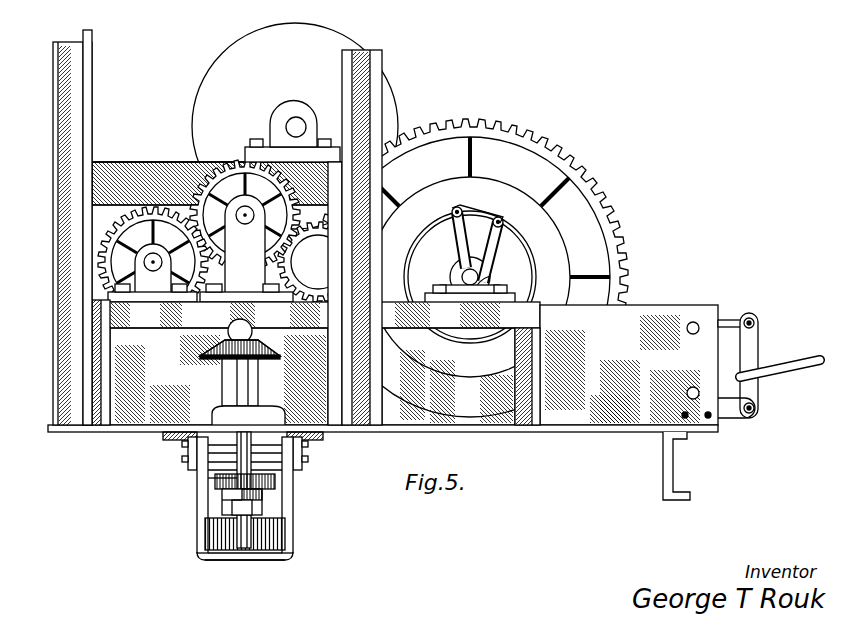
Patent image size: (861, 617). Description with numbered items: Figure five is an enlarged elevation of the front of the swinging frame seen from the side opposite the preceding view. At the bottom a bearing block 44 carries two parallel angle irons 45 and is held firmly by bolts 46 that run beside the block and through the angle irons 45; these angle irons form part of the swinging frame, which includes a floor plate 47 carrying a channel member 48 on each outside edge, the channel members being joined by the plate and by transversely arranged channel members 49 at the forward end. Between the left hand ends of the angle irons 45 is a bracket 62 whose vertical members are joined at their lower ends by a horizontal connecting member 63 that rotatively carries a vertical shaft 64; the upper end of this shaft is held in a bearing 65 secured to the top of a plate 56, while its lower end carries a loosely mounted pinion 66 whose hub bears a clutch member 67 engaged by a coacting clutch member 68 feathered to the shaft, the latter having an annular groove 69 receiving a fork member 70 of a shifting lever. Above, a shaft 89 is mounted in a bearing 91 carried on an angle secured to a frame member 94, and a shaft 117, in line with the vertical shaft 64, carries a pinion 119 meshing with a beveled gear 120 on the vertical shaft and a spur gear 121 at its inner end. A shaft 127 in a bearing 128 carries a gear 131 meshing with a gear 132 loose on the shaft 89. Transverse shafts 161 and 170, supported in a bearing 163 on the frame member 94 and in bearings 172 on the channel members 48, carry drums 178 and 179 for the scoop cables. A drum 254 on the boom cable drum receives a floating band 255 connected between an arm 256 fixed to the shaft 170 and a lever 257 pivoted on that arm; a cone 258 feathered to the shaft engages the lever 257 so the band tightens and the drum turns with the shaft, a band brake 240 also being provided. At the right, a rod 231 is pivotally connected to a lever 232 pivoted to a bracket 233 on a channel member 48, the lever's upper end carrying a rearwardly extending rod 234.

The bearing block 44 is at (278, 480).
The angle irons 45 is at (186, 470).
The bolts 46 is at (228, 458).
The floor plate 47 is at (423, 433).
The channel member 48 is at (414, 365).
The transversely arranged channel members 49 is at (663, 462).
The plate 56 is at (118, 427).
The bracket 62 is at (287, 519).
The connecting member 63 is at (268, 561).
The vertical shaft 64 is at (242, 445).
The bearing 65 is at (262, 418).
The pinion 66 is at (216, 534).
The clutch member 67 is at (236, 515).
The coacting clutch member 68 is at (258, 505).
The annular groove 69 is at (228, 492).
The fork member 70 is at (268, 491).
The shaft 89 is at (154, 264).
The bearing 91 is at (153, 272).
The frame member 94 is at (316, 315).
The shaft 117 is at (268, 352).
The pinion 119 is at (228, 342).
The beveled gear 120 is at (232, 364).
The spur gear 121 is at (288, 252).
The shaft 127 is at (247, 224).
The bearing 128 is at (245, 247).
The gear 131 is at (208, 162).
The gear 132 is at (160, 204).
The shaft 161 is at (492, 280).
The bearing 163 is at (470, 285).
The shaft 170 is at (293, 124).
The bearings 172 is at (292, 151).
The drum 178 is at (295, 126).
The drum 179 is at (470, 268).
The rod 231 is at (792, 371).
The lever 232 is at (759, 342).
The bracket 233 is at (730, 418).
The rod 234 is at (740, 318).
The band brake 240 is at (486, 224).
The drum 254 is at (452, 265).
The floating band 255 is at (438, 230).
The arm 256 is at (462, 237).
The lever 257 is at (505, 236).
The cone 258 is at (495, 288).